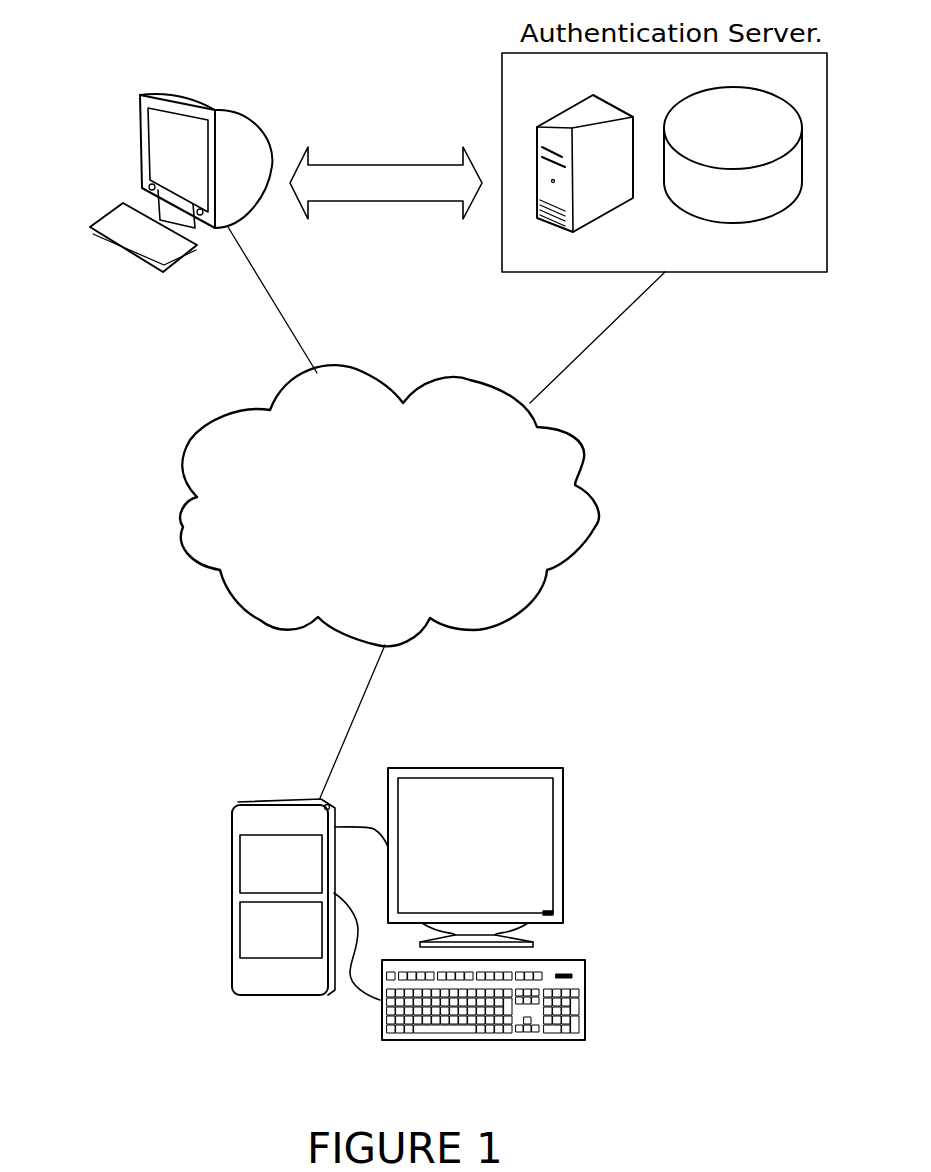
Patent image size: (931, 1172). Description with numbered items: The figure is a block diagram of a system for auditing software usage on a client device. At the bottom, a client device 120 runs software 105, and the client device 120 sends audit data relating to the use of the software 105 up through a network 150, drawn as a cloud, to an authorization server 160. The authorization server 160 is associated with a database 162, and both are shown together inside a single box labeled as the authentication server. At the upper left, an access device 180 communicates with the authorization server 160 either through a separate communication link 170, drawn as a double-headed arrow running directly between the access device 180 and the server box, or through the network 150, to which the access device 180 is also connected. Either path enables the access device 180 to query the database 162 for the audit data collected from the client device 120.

The software 105 is at (281, 864).
The client device 120 is at (217, 897).
The network 150 is at (592, 508).
The authorization server 160 is at (603, 215).
The database 162 is at (724, 223).
The communication link 170 is at (380, 163).
The access device 180 is at (140, 142).